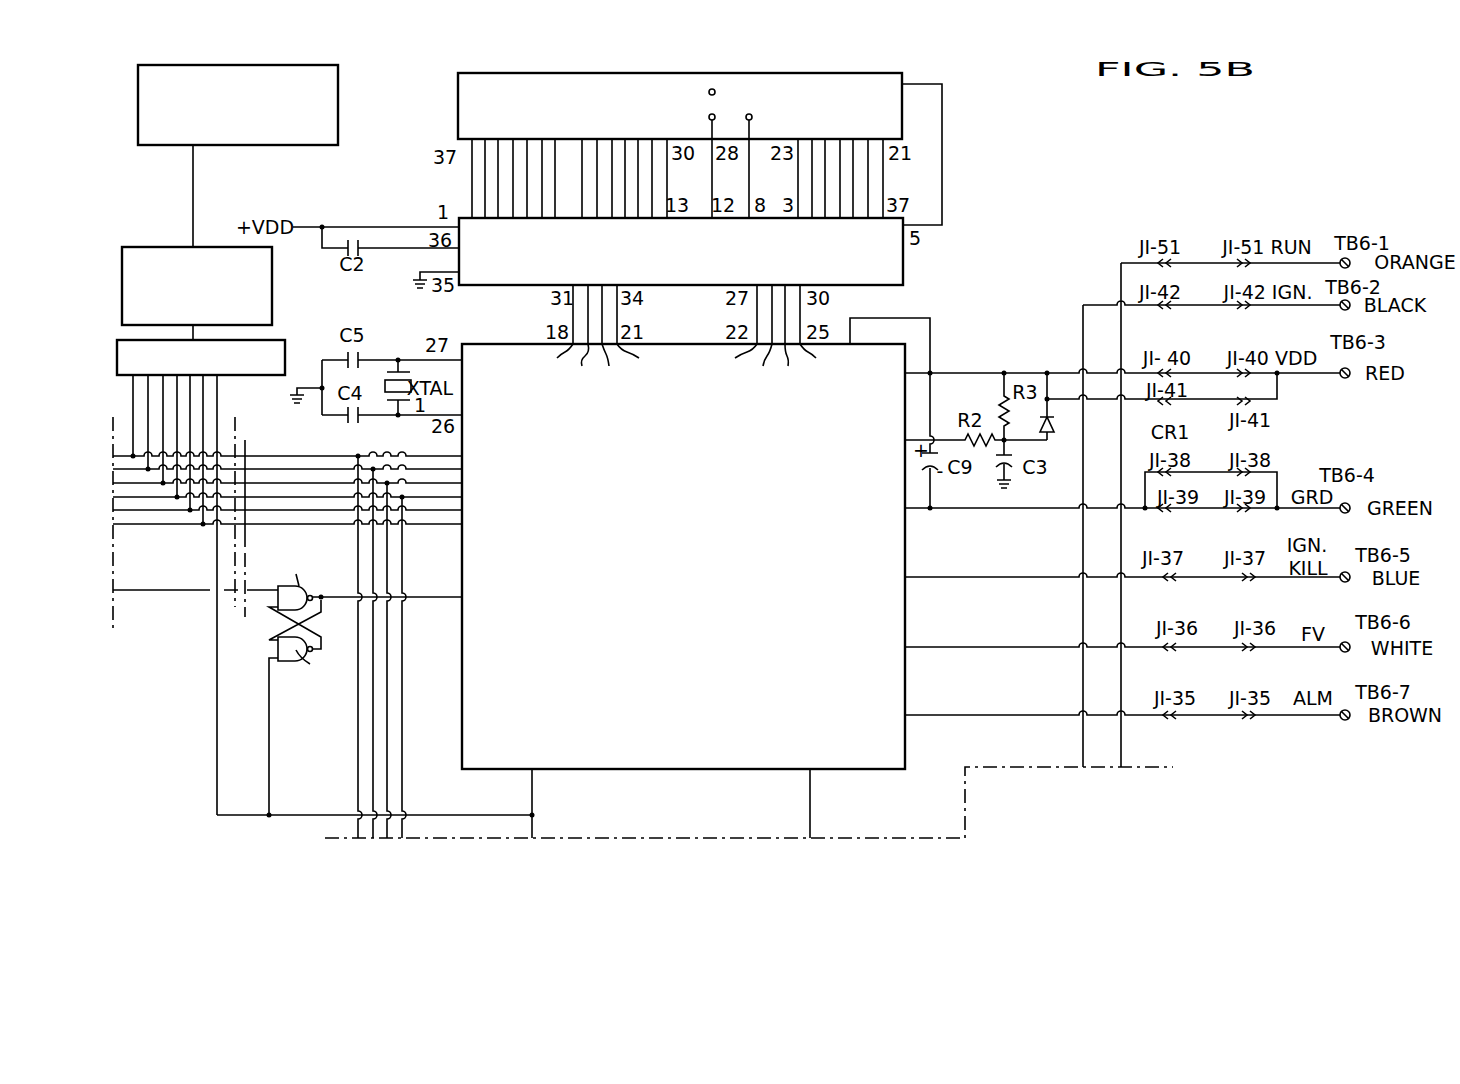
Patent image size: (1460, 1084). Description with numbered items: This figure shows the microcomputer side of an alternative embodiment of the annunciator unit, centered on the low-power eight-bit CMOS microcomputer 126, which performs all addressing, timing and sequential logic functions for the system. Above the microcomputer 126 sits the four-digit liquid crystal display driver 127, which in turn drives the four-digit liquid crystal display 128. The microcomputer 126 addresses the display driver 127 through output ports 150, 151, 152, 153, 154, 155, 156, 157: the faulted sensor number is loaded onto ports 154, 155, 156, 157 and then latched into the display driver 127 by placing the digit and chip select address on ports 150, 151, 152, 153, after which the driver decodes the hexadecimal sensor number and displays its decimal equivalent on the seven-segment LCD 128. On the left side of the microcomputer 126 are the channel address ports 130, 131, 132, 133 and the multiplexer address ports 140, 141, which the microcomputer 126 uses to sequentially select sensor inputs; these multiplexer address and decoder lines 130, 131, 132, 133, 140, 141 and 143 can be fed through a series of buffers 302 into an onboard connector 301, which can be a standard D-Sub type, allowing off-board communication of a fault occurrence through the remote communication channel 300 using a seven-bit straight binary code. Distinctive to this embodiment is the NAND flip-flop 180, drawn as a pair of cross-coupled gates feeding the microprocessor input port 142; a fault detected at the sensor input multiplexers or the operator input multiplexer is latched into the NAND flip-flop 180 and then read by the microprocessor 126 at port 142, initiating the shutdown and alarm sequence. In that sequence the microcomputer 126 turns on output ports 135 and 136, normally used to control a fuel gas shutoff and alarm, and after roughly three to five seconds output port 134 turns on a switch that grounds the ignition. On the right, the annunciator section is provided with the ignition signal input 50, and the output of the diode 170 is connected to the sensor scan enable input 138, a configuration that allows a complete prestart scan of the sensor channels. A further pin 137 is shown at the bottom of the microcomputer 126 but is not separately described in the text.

The ignition signal input 50 is at (1392, 292).
The microcomputer 126 is at (660, 584).
The liquid crystal display driver 127 is at (512, 253).
The liquid crystal display 128 is at (528, 108).
The channel address port 130 is at (462, 457).
The channel address port 131 is at (462, 470).
The channel address port 132 is at (462, 484).
The channel address port 133 is at (462, 497).
The ignition ground output port 134 is at (905, 577).
The shutdown output port 135 is at (905, 647).
The alarm output port 136 is at (905, 715).
The pin 7 line 137 is at (810, 789).
The sensor scan enable input 138 is at (953, 446).
The multiplexer address port 140 is at (462, 511).
The multiplexer address port 141 is at (462, 524).
The microprocessor input port 142 is at (408, 597).
The multiplexer address and decoder line 143 is at (527, 789).
The digit and chip select address port 150 is at (550, 330).
The digit and chip select address port 151 is at (572, 341).
The digit and chip select address port 152 is at (613, 341).
The digit and chip select address port 153 is at (642, 330).
The sensor number output port 154 is at (730, 330).
The sensor number output port 155 is at (752, 341).
The sensor number output port 156 is at (792, 341).
The sensor number output port 157 is at (823, 330).
The diode 170 is at (1060, 417).
The NAND flip-flop 180 is at (294, 672).
The remote communication channel 300 is at (238, 105).
The onboard connector 301 is at (197, 286).
The buffers 302 is at (201, 357).